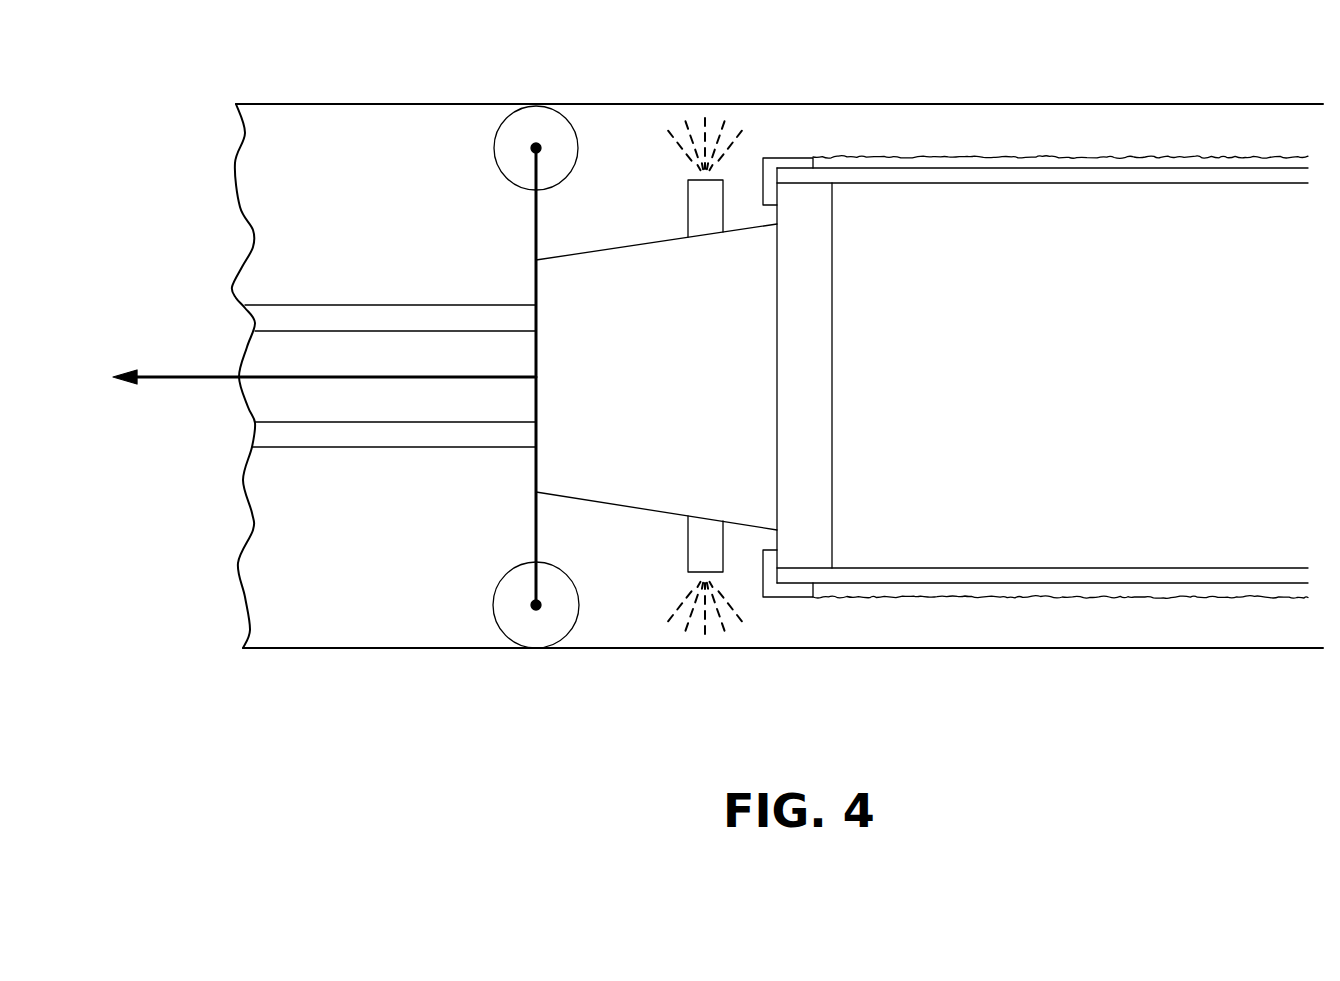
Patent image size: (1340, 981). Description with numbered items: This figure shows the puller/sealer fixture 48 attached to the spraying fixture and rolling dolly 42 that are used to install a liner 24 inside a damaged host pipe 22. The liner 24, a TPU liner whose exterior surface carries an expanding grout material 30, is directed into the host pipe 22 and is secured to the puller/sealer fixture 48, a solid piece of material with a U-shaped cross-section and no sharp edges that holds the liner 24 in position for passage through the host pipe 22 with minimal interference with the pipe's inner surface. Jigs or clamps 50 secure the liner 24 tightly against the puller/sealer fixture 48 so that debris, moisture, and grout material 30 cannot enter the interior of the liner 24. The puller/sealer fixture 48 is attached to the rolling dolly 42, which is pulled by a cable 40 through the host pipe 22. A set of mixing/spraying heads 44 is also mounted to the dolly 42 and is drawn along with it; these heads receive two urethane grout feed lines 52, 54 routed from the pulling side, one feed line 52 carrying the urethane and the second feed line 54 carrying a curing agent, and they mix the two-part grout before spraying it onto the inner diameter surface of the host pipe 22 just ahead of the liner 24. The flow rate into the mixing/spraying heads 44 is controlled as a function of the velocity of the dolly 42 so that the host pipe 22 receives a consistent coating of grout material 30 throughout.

The host pipe 22 is at (782, 104).
The liner 24 is at (1047, 148).
The grout material 30 is at (1188, 157).
The cable 40 is at (175, 372).
The rolling dolly 42 is at (510, 128).
The mixing/spraying heads 44 is at (697, 210).
The puller/sealer fixture 48 is at (833, 389).
The clamps 50 is at (798, 598).
The feed line 52 is at (296, 315).
The second feed line 54 is at (305, 437).